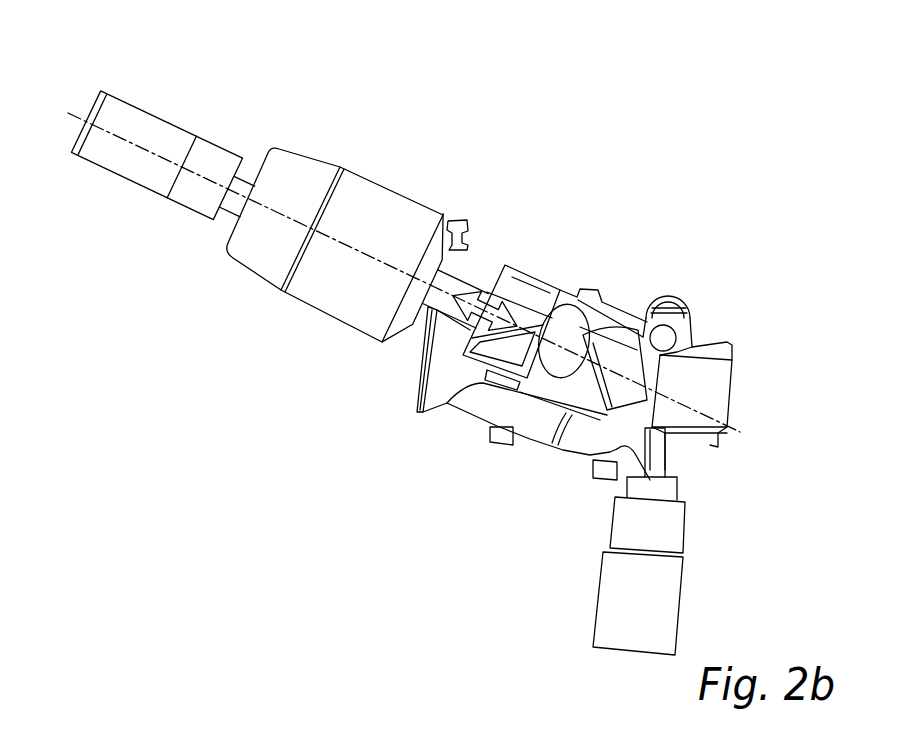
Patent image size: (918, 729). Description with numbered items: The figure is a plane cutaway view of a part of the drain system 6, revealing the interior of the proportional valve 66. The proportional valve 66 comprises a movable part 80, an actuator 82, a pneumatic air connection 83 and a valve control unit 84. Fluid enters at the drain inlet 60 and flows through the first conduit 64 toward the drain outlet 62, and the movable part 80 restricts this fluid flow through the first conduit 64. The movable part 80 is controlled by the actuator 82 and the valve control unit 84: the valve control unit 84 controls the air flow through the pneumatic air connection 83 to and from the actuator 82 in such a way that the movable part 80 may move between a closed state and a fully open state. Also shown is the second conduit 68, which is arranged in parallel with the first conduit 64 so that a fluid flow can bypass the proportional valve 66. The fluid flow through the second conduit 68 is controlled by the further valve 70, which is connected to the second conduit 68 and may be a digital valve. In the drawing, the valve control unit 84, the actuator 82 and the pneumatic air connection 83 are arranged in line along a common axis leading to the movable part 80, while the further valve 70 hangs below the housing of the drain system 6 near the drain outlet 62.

The drain system 6 is at (435, 343).
The drain inlet 60 is at (733, 387).
The drain outlet 62 is at (612, 312).
The first conduit 64 is at (703, 340).
The proportional valve 66 is at (277, 204).
The second conduit 68 is at (578, 438).
The further valve 70 is at (687, 570).
The movable part 80 is at (487, 280).
The actuator 82 is at (308, 167).
The pneumatic air connection 83 is at (449, 227).
The valve control unit 84 is at (150, 127).